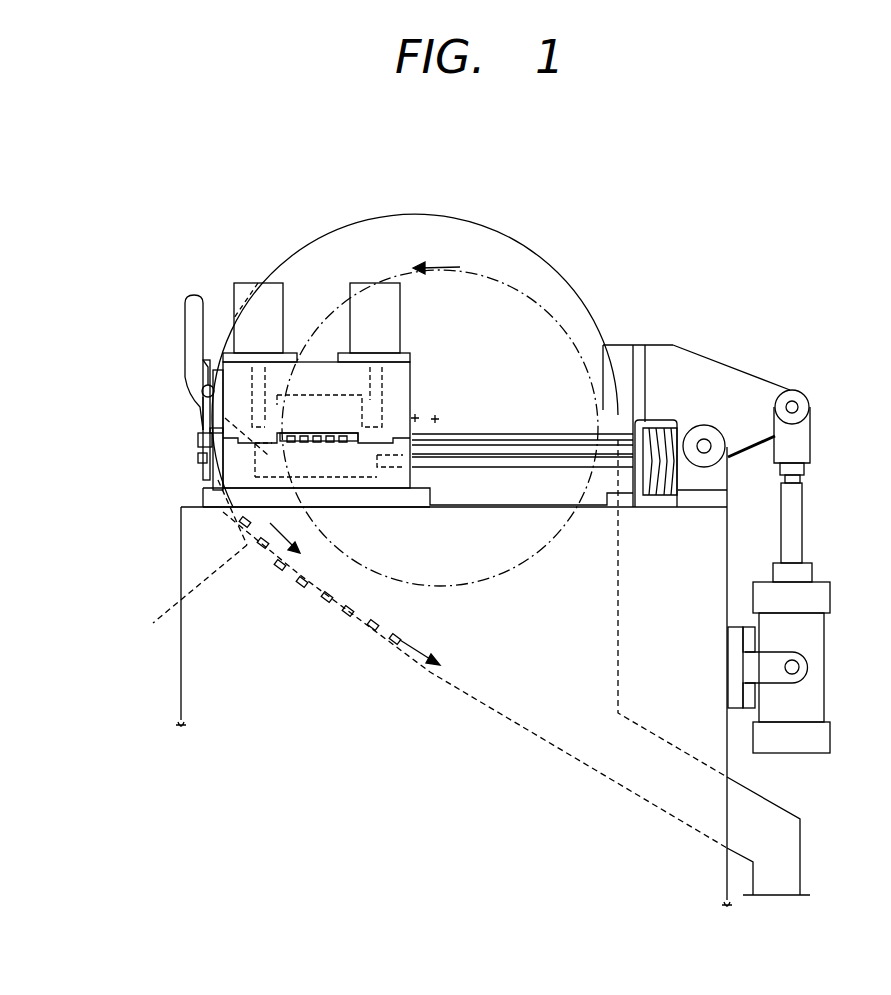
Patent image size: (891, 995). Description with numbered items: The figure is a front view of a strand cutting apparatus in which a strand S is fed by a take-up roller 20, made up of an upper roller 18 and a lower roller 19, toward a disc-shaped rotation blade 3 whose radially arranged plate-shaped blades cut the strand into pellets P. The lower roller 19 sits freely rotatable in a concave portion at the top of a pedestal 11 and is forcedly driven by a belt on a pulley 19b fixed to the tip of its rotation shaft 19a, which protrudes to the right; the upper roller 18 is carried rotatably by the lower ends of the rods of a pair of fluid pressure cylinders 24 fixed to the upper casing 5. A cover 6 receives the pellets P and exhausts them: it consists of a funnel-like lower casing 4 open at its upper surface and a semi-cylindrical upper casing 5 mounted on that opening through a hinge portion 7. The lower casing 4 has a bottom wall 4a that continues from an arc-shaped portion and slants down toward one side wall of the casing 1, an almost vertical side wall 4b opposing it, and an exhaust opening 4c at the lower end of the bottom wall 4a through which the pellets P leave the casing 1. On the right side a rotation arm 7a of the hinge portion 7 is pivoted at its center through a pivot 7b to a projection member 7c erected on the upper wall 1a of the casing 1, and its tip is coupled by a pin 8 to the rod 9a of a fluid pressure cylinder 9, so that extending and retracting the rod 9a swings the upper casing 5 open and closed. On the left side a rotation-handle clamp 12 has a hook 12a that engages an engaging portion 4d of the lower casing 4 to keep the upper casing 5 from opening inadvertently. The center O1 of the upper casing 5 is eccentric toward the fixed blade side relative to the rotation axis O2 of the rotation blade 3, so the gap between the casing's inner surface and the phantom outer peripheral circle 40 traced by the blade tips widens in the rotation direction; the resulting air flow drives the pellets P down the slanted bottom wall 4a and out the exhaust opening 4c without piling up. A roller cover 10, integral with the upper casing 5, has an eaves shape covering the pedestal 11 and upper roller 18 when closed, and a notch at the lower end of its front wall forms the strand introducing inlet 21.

The casing 1 is at (188, 702).
The upper wall 1a is at (370, 507).
The rotation blade 3 is at (480, 272).
The lower casing 4 is at (150, 640).
The bottom wall 4a is at (545, 740).
The side wall 4b is at (633, 723).
The exhaust opening 4c is at (772, 897).
The engaging portion 4d is at (197, 458).
The upper casing 5 is at (478, 219).
The cover 6 is at (437, 208).
The hinge portion 7 is at (835, 275).
The rotation arm 7a is at (703, 367).
The pivot 7b is at (718, 473).
The projection member 7c is at (758, 440).
The pin 8 is at (810, 404).
The fluid pressure cylinder 9 is at (826, 648).
The rod 9a is at (802, 522).
The roller cover 10 is at (323, 362).
The pedestal 11 is at (250, 478).
The clamp 12 is at (186, 333).
The hook 12a is at (197, 442).
The upper roller 18 is at (258, 283).
The lower roller 19 is at (201, 393).
The rotation shaft 19a is at (571, 462).
The pulley 19b is at (652, 497).
The take-up roller 20 is at (95, 412).
The strand introducing inlet 21 is at (292, 450).
The fluid pressure cylinders 24 is at (243, 283).
The phantom outer peripheral circle 40 is at (540, 300).
The strand S is at (303, 395).
The center of the upper casing O1 is at (415, 417).
The rotation axis of the rotation blade O2 is at (436, 418).
The pellets P is at (277, 570).